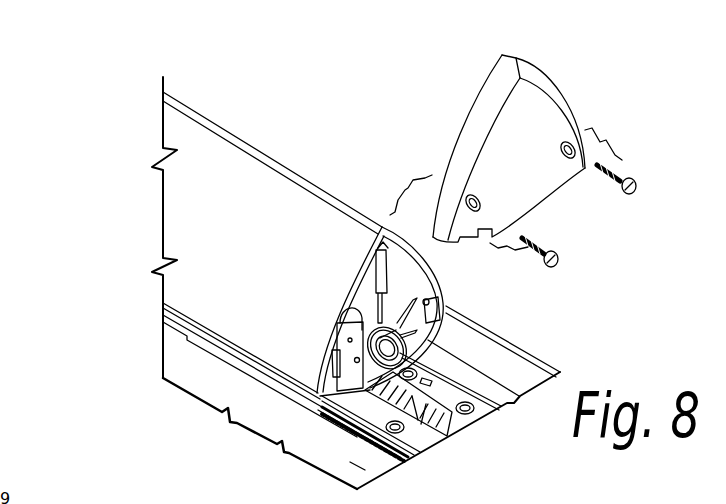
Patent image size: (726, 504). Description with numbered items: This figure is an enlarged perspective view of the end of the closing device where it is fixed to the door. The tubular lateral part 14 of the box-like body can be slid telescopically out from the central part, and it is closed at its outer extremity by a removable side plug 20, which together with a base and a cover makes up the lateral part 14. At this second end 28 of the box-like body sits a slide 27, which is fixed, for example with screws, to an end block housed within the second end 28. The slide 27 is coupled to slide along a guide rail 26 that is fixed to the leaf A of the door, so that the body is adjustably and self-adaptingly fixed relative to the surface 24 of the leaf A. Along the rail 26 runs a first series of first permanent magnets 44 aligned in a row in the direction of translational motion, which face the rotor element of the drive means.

The lateral part 14 is at (185, 222).
The side plug 20 is at (518, 138).
The surface of the leaf 24 is at (528, 362).
The guide rail 26 is at (448, 400).
The slide 27 is at (255, 375).
The second end of the box-like body 28 is at (334, 290).
The first permanent magnets 44 is at (447, 430).
The leaf A is at (357, 467).